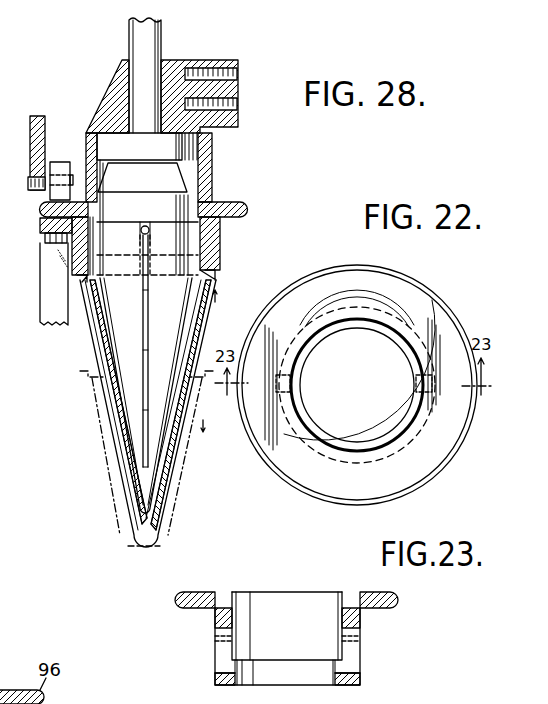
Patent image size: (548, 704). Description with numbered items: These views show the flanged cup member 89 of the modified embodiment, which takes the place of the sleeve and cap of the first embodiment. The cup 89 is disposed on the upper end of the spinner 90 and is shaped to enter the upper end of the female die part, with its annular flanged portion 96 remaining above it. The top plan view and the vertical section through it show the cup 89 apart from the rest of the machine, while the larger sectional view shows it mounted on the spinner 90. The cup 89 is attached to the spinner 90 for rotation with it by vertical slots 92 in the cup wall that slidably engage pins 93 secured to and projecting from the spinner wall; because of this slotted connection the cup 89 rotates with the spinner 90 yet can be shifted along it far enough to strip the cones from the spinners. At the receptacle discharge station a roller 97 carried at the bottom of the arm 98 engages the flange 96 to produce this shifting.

In FIG. 28, the flanged cup member 89 is at (220, 246).
In FIG. 23, the flanged cup member 89 is at (281, 594).
In FIG. 28, the spinner 90 is at (158, 171).
In FIG. 28, the vertical slots 92 is at (156, 226).
In FIG. 23, the vertical slots 92 is at (217, 645).
In FIG. 28, the pins 93 is at (141, 233).
In FIG. 22, the pins 93 is at (291, 384).
In FIG. 28, the annular flanged portion 96 is at (242, 208).
In FIG. 22, the annular flanged portion 96 is at (436, 304).
In FIG. 23, the annular flanged portion 96 is at (398, 600).
In FIG. 28, the roller 97 is at (58, 162).
In FIG. 28, the arm 98 is at (40, 117).